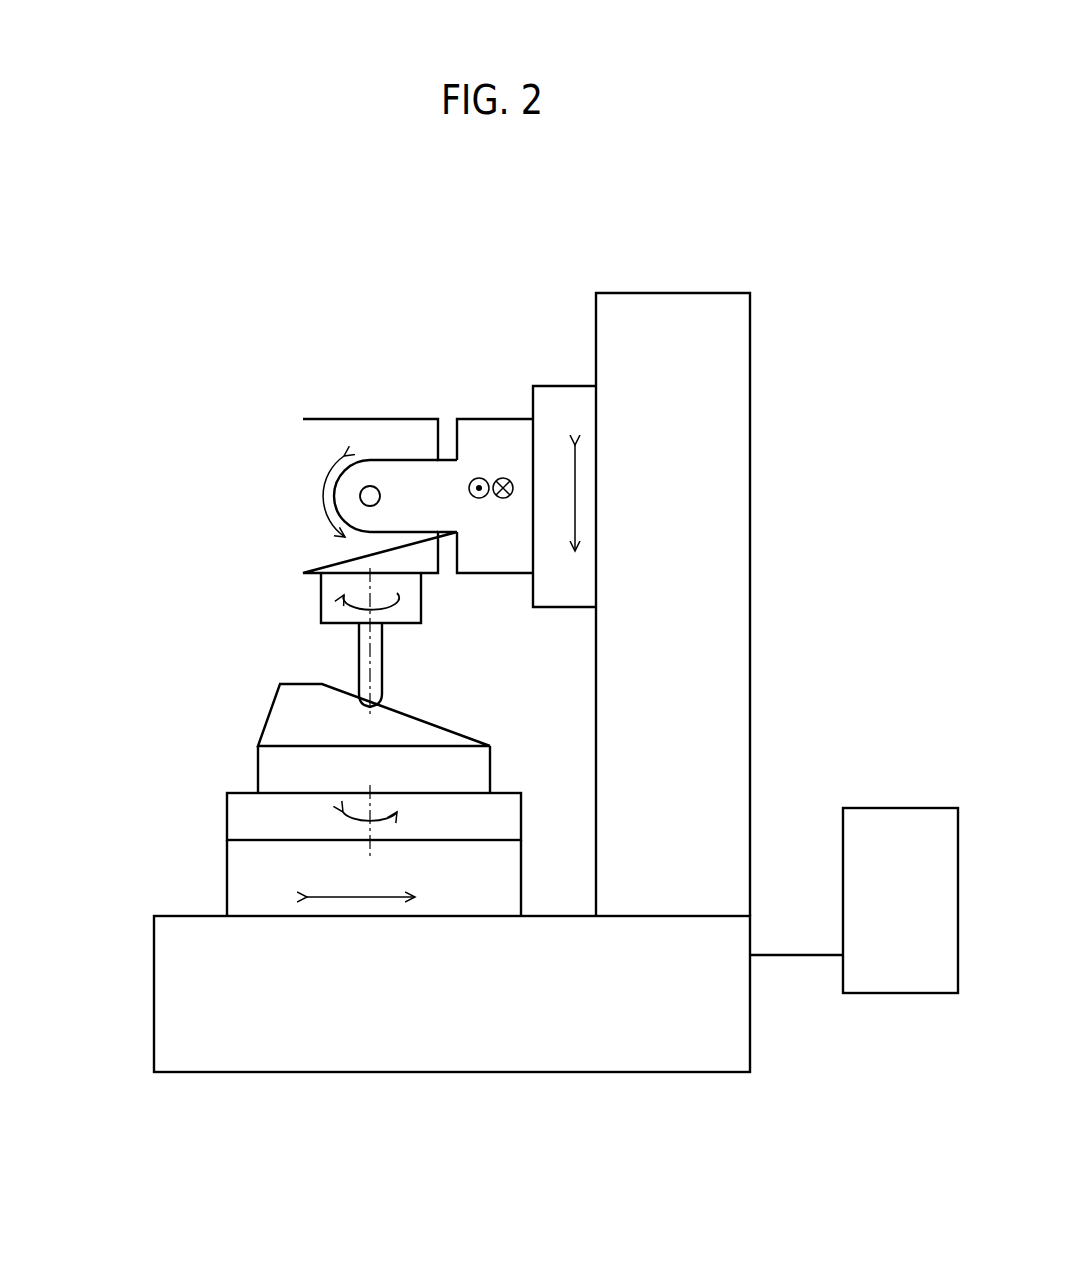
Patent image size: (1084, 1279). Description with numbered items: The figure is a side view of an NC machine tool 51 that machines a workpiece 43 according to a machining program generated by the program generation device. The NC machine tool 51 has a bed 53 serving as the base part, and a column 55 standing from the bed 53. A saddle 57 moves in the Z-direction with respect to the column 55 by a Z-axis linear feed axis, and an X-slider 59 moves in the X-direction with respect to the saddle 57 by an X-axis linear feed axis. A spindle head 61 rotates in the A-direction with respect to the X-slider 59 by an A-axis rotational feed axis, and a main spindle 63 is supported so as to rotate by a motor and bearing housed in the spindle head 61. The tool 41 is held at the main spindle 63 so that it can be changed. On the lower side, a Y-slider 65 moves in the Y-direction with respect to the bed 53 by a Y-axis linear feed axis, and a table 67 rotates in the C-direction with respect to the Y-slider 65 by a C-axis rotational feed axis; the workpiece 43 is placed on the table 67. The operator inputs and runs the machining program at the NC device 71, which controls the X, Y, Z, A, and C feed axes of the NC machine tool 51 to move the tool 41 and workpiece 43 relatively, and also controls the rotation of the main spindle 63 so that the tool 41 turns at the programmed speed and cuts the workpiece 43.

The tool 41 is at (358, 663).
The workpiece 43 is at (268, 717).
The NC machine tool 51 is at (292, 244).
The bed 53 is at (154, 995).
The column 55 is at (673, 293).
The saddle 57 is at (565, 386).
The X-slider 59 is at (486, 419).
The spindle head 61 is at (345, 419).
The main spindle 63 is at (321, 604).
The Y-slider 65 is at (227, 881).
The table 67 is at (227, 797).
The NC device 71 is at (888, 808).